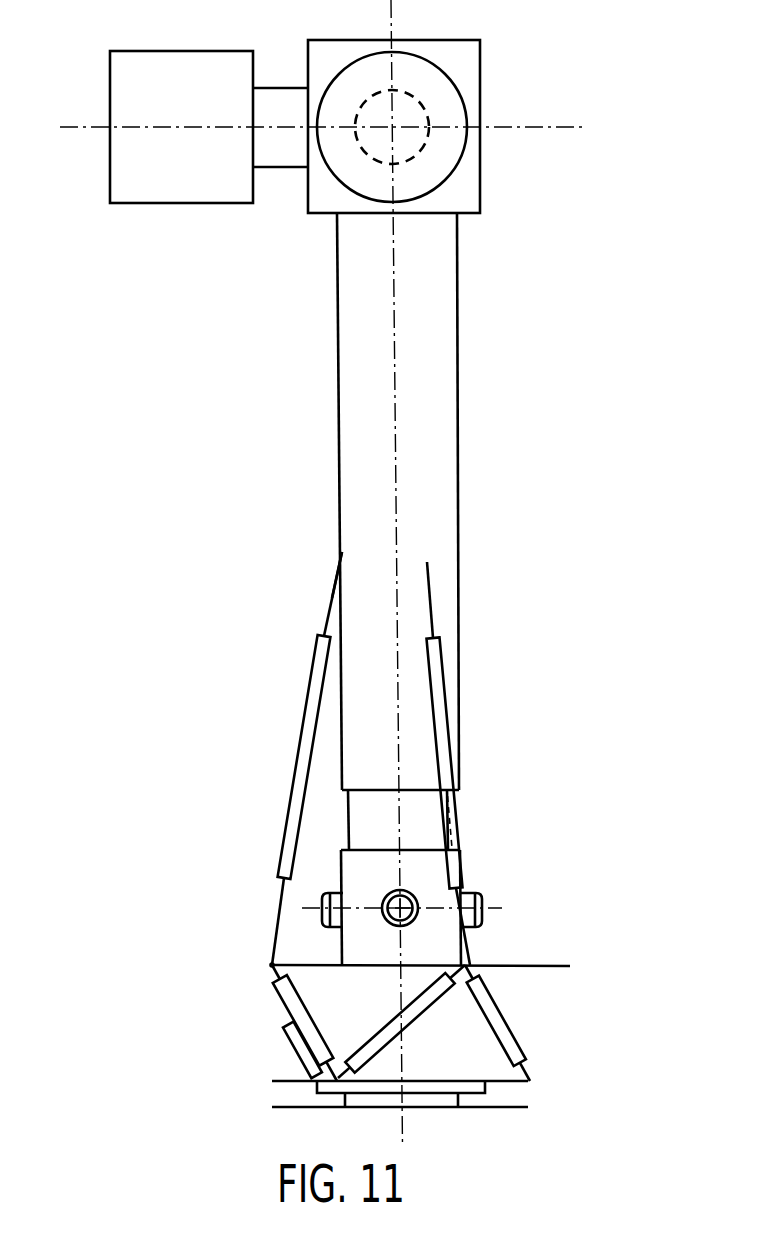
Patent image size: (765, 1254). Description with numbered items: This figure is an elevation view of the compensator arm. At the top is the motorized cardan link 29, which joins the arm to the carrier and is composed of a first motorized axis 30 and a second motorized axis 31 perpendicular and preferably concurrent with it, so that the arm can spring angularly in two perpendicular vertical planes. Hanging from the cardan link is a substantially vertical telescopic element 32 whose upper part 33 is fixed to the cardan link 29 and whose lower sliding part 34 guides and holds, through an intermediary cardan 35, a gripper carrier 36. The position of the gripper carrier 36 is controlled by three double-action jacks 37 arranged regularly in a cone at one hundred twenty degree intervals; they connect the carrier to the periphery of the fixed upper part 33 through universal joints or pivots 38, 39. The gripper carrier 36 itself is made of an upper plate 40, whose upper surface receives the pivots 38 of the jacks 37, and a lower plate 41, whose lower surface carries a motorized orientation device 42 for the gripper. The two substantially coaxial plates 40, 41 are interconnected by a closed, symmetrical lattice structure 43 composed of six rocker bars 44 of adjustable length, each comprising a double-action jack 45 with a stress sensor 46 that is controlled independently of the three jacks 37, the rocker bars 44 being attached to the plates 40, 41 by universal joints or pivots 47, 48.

The motorized cardan link 29 is at (467, 63).
The first motorized axis 30 is at (392, 127).
The second motorized axis 31 is at (82, 127).
The telescopic element 32 is at (463, 589).
The upper part of telescopic element 33 is at (415, 752).
The lower sliding part 34 is at (422, 822).
The cardan 35 is at (425, 874).
The gripper carrier 36 is at (422, 1038).
The double-action jacks 37 is at (309, 685).
The universal joints or pivots 38 is at (272, 965).
The universal joints or pivots 39 is at (342, 552).
The upper plate 40 is at (439, 969).
The lower plate 41 is at (528, 1080).
The motorized orientation device 42 is at (366, 1099).
The closed lattice structure 43 is at (455, 1032).
The rocker bars 44 is at (255, 1028).
The double-action jack 45 is at (287, 1008).
The stress sensor 46 is at (290, 1041).
The universal joints or pivots 47 is at (270, 967).
The universal joints or pivots 48 is at (340, 1073).